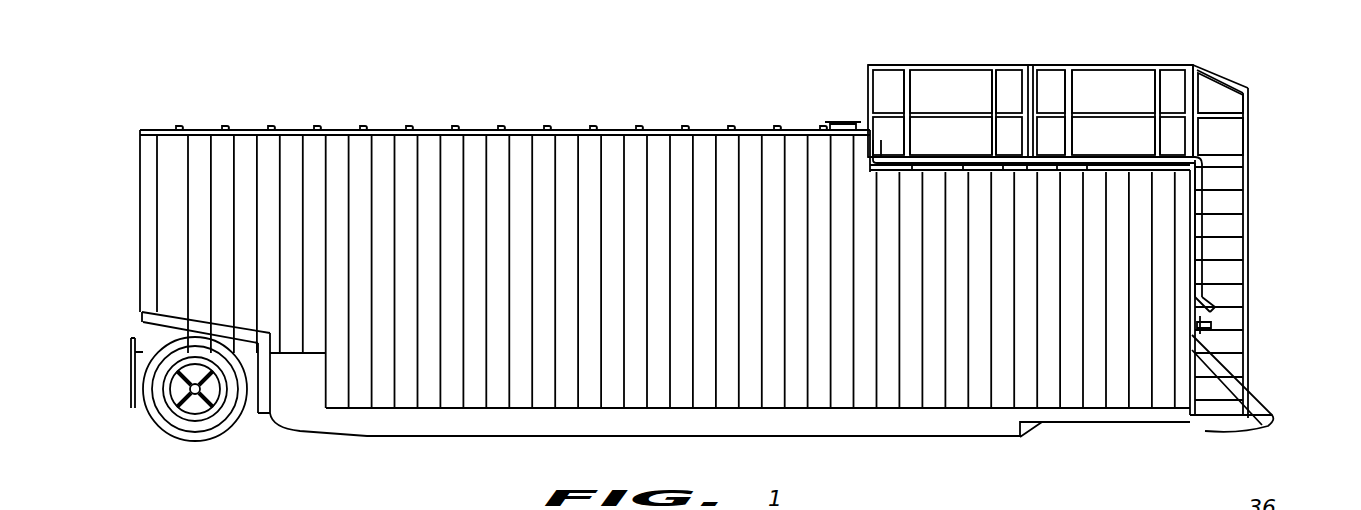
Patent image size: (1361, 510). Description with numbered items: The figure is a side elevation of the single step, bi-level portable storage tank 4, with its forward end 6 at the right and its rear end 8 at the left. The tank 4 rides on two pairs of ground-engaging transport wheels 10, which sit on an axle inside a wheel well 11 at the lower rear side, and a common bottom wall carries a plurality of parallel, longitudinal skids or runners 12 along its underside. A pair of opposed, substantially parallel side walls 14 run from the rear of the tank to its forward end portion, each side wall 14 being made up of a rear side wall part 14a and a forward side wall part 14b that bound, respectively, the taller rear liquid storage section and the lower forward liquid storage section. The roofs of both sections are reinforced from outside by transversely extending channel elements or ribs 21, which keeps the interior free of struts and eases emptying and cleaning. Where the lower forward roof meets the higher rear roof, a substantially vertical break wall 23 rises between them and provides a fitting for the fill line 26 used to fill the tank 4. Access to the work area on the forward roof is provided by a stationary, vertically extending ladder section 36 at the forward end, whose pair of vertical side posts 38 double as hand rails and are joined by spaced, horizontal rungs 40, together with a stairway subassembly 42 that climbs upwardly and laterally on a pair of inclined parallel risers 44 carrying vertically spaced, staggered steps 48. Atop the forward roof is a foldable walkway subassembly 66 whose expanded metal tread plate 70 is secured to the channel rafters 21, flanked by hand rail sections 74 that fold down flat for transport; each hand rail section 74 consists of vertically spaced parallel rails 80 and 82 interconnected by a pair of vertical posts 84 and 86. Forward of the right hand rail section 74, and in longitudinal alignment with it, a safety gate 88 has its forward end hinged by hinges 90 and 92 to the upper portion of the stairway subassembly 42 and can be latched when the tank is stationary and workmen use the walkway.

The bi-level portable storage tank 4 is at (233, 106).
The forward end 6 is at (1244, 246).
The rear end 8 is at (128, 193).
The transport wheels 10 is at (188, 425).
The wheel well 11 is at (255, 410).
The skids or runners 12 is at (825, 425).
The side walls 14 is at (410, 183).
The rear side wall part 14a is at (430, 345).
The forward side wall part 14b is at (1072, 335).
The channel elements or ribs 21 is at (593, 128).
The break wall 23 is at (877, 172).
The fill line 26 is at (1035, 162).
The ladder section 36 is at (1262, 370).
The vertical side posts 38 is at (1190, 375).
The rungs 40 is at (1225, 340).
The stairway subassembly 42 is at (1263, 240).
The risers 44 is at (1250, 245).
The steps 48 is at (1225, 218).
The walkway subassembly 66 is at (985, 120).
The tread plate 70 is at (1080, 158).
The hand rail sections 74 is at (858, 94).
The upper rail 80 is at (927, 64).
The lower rail 82 is at (953, 119).
The vertical post 84 is at (903, 88).
The vertical post 86 is at (992, 87).
The safety gate 88 is at (1223, 64).
The hinge 90 is at (1250, 100).
The hinge 92 is at (1250, 143).